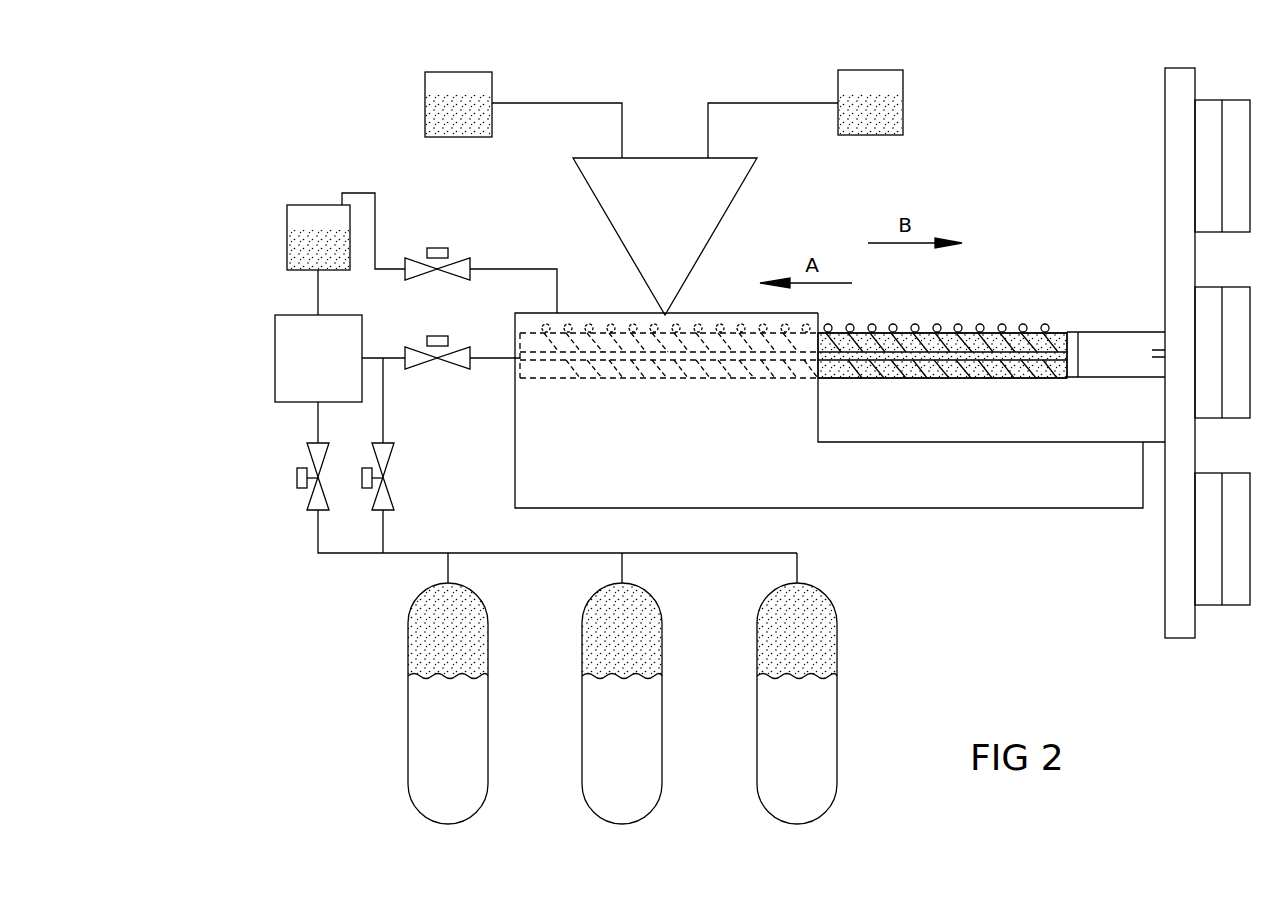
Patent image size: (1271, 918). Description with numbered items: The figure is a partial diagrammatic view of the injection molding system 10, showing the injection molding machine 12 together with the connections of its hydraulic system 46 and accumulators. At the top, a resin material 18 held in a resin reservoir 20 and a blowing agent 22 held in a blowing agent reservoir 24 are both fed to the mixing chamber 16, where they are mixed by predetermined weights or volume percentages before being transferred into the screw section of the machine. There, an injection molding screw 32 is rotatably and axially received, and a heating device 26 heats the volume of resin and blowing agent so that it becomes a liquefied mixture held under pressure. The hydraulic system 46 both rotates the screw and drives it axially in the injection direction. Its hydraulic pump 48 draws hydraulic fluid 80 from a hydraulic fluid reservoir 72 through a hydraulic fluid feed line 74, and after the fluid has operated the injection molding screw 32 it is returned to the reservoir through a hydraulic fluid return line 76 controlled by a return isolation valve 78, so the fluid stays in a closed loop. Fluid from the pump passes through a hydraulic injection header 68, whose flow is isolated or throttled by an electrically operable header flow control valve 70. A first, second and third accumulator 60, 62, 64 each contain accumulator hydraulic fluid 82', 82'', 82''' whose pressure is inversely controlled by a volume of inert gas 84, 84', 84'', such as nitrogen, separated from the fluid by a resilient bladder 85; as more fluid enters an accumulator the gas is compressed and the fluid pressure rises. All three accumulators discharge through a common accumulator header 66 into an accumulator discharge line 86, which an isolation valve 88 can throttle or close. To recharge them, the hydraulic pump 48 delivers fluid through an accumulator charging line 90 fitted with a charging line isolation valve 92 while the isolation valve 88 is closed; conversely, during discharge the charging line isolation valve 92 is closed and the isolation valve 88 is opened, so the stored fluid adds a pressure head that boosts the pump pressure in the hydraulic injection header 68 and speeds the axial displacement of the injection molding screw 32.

The injection molding system 10 is at (1040, 78).
The injection molding machine 12 is at (778, 488).
The mixing chamber 16 is at (712, 220).
The resin material 18 is at (475, 125).
The resin reservoir 20 is at (468, 72).
The blowing agent 22 is at (890, 108).
The blowing agent reservoir 24 is at (868, 70).
The heating device 26 is at (937, 323).
The injection molding screw 32 is at (1068, 380).
The hydraulic system 46 is at (253, 284).
The hydraulic pump 48 is at (278, 390).
The first accumulator 60 is at (842, 642).
The second accumulator 62 is at (665, 652).
The third accumulator 64 is at (490, 643).
The accumulator header 66 is at (514, 555).
The hydraulic injection header 68 is at (503, 352).
The header flow control valve 70 is at (410, 368).
The hydraulic fluid reservoir 72 is at (287, 227).
The hydraulic fluid feed line 74 is at (322, 290).
The hydraulic fluid return line 76 is at (512, 268).
The return isolation valve 78 is at (467, 258).
The hydraulic fluid 80 is at (305, 237).
The accumulator hydraulic fluid 82' is at (767, 641).
The accumulator hydraulic fluid 82'' is at (652, 628).
The accumulator hydraulic fluid 82''' is at (406, 629).
The inert gas 84 is at (761, 728).
The inert gas 84' is at (584, 727).
The inert gas 84'' is at (402, 729).
The bladder 85 is at (480, 675).
The accumulator discharge line 86 is at (385, 535).
The isolation valve 88 is at (392, 498).
The accumulator charging line 90 is at (318, 542).
The charging line isolation valve 92 is at (308, 505).